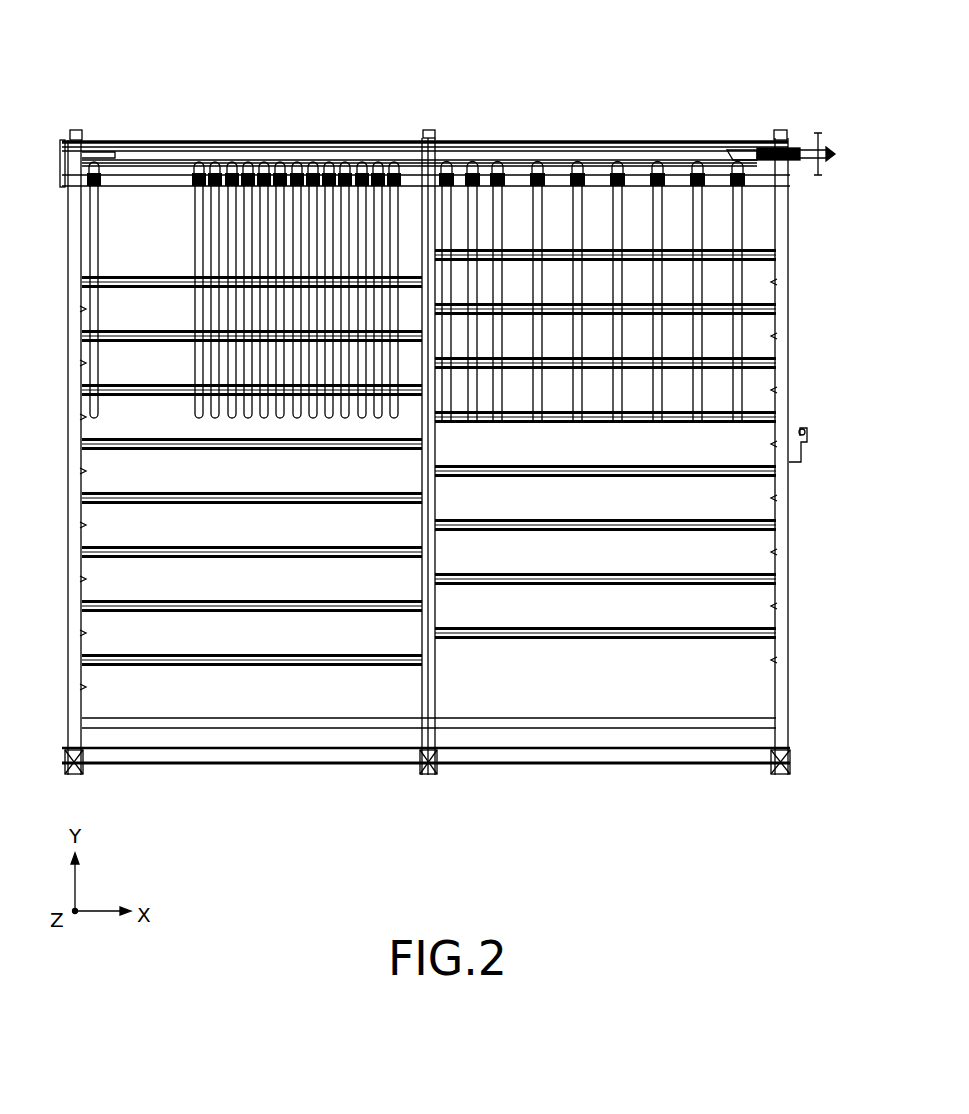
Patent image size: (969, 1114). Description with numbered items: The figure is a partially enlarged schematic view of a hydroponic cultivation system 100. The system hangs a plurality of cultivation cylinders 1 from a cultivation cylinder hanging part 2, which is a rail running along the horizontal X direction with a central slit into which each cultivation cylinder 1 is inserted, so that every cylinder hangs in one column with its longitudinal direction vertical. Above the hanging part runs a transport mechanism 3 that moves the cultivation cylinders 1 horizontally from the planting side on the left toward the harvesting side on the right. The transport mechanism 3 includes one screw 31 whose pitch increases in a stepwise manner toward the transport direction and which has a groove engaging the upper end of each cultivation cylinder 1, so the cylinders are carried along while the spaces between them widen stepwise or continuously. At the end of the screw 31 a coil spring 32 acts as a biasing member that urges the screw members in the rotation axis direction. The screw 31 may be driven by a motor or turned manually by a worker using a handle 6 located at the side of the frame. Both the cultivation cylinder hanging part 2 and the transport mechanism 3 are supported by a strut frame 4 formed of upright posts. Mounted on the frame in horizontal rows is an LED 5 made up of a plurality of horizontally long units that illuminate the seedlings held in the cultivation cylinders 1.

The hydroponic cultivation system 100 is at (441, 70).
The cultivation cylinder 1 is at (192, 237).
The cultivation cylinder hanging part 2 is at (147, 182).
The transport mechanism 3 is at (447, 123).
The screw 31 is at (612, 152).
The coil spring 32 is at (762, 150).
The strut frame 4 is at (67, 513).
The LED 5 is at (102, 438).
The handle 6 is at (808, 428).